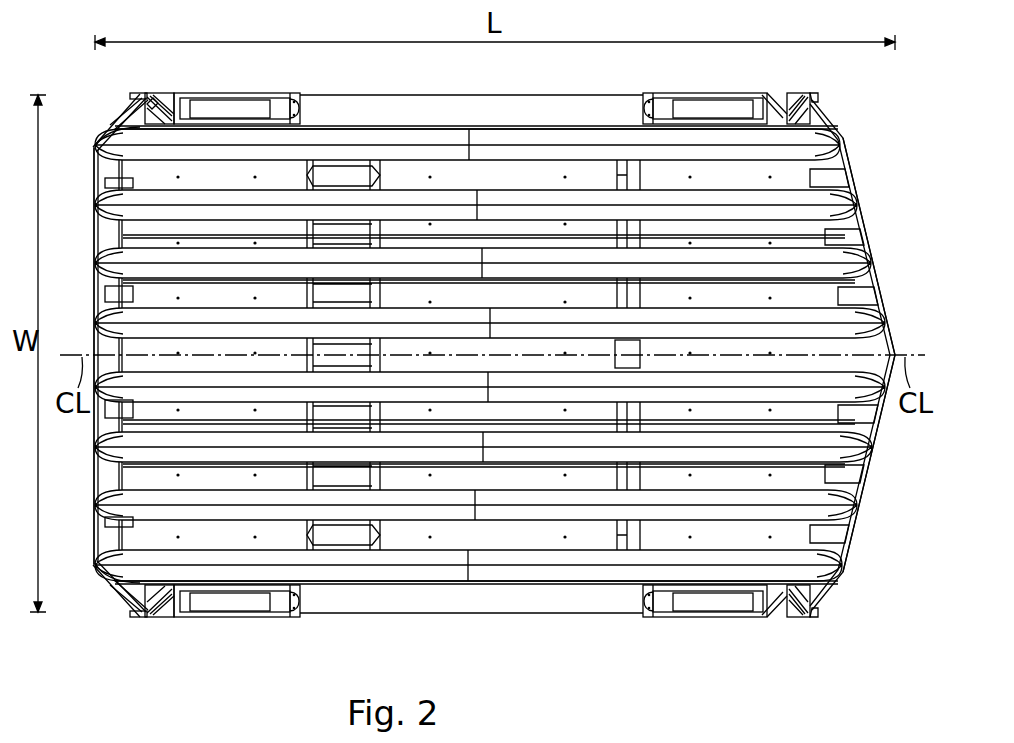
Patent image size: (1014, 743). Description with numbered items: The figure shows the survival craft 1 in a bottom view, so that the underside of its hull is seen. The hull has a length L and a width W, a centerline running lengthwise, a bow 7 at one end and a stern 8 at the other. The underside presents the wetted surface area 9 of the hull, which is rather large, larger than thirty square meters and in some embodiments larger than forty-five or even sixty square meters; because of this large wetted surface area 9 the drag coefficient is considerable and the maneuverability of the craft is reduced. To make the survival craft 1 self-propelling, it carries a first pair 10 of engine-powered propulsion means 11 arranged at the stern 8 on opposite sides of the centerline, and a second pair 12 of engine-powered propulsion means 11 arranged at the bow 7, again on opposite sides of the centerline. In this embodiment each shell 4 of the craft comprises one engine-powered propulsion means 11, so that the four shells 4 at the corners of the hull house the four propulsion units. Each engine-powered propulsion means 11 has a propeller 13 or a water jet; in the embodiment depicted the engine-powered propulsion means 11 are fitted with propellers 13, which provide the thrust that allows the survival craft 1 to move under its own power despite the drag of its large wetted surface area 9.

The survival craft 1 is at (472, 627).
The shell 4 is at (212, 96).
The bow 7 is at (892, 317).
The stern 8 is at (95, 297).
The wetted surface area 9 is at (770, 400).
The first pair of engine-powered propulsion means 10 is at (137, 95).
The engine-powered propulsion means 11 is at (165, 100).
The second pair of engine-powered propulsion means 12 is at (812, 95).
The propeller 13 is at (130, 111).